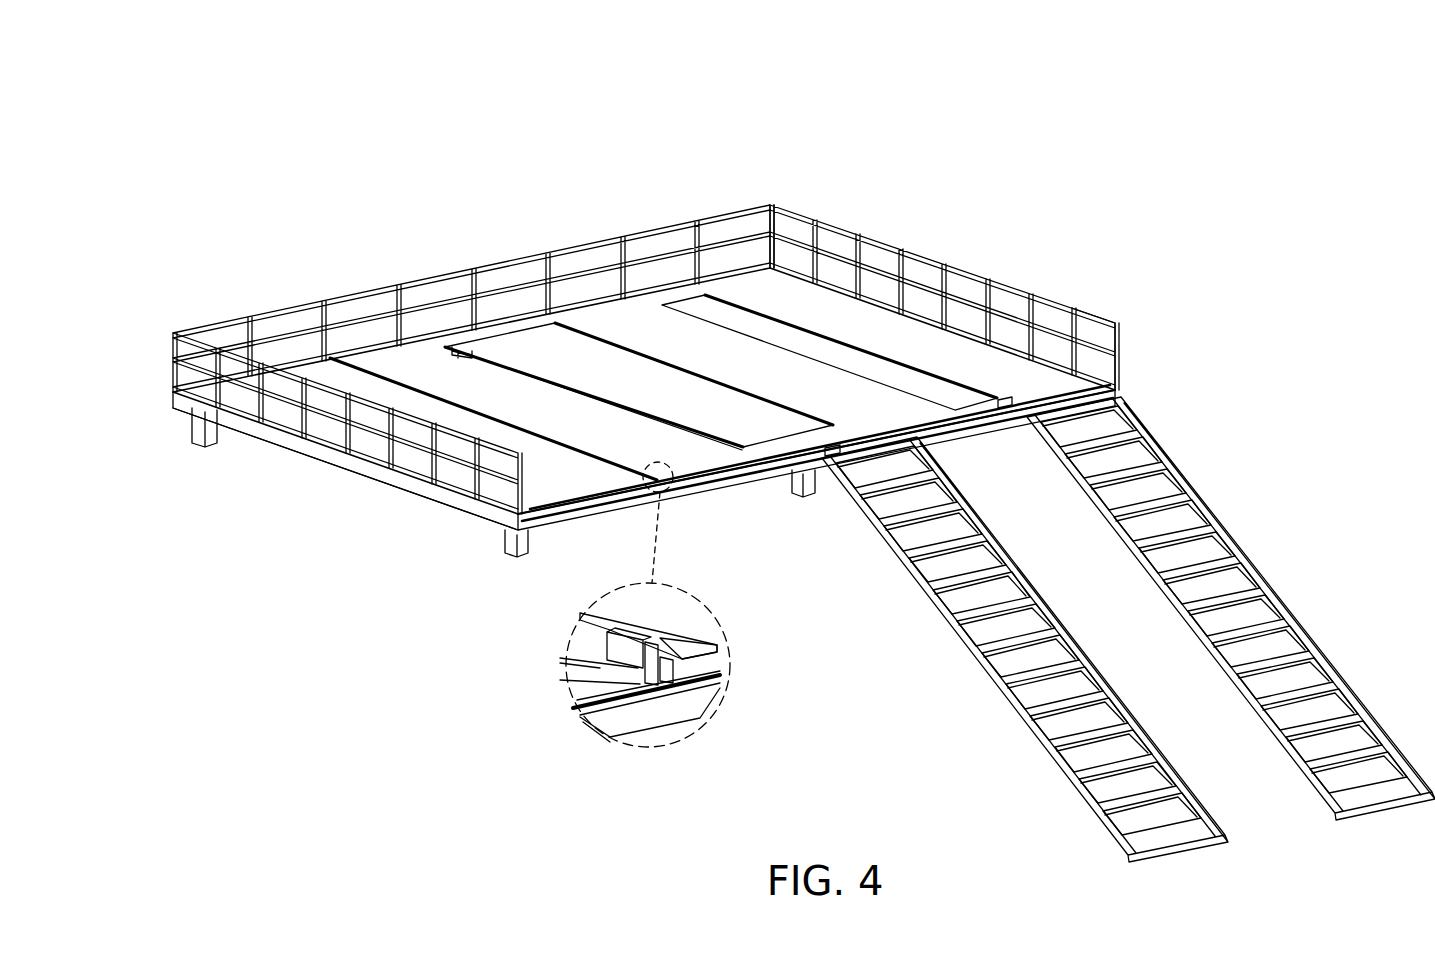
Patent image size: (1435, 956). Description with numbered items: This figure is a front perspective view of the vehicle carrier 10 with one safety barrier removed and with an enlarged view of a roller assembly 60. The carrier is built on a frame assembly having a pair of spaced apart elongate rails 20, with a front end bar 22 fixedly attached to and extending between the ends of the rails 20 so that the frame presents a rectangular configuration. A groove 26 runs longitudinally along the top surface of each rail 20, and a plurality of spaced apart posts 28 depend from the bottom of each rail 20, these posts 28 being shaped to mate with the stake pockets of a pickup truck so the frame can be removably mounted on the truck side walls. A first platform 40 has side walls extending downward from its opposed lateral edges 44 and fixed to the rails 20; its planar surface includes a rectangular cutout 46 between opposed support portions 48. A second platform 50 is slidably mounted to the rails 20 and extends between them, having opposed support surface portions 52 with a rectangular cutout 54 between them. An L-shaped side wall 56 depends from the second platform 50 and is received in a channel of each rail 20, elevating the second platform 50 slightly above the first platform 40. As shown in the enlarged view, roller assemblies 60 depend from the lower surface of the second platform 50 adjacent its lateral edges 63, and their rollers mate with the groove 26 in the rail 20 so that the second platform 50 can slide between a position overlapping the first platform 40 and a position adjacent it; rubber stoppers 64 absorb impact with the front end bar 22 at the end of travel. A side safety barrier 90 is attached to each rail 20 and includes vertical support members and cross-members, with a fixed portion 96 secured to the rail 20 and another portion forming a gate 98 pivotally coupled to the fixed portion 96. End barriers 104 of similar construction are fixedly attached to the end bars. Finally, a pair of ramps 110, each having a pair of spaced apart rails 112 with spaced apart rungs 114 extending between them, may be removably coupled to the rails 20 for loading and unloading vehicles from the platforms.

The vehicle carrier 10 is at (1101, 153).
The rail 20 is at (240, 420).
The front end bar 22 is at (350, 480).
The groove 26 is at (583, 693).
The post 28 is at (212, 455).
The first platform 40 is at (1005, 405).
The lateral edge 44 is at (1025, 432).
The rectangular cutout 46 is at (860, 365).
The support portion 48 is at (829, 319).
The second platform 50 is at (708, 465).
The support surface portion 52 is at (657, 362).
The rectangular cutout 54 is at (517, 371).
The L-shaped side wall 56 is at (640, 672).
The roller assembly 60 is at (745, 677).
The lateral edge 63 is at (722, 645).
The rubber stopper 64 is at (600, 650).
The side safety barrier 90 is at (646, 367).
The fixed portion 96 is at (363, 297).
The gate 98 is at (648, 222).
The end barrier 104 is at (898, 219).
The ramp 110 is at (1128, 629).
The ramp rail 112 is at (1270, 598).
The rung 114 is at (1320, 690).